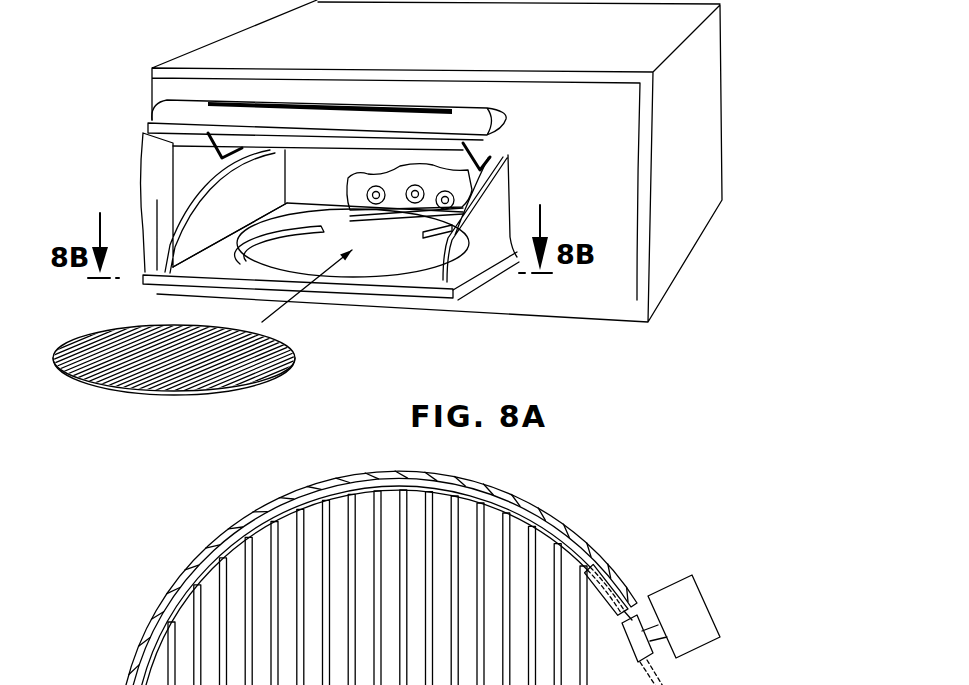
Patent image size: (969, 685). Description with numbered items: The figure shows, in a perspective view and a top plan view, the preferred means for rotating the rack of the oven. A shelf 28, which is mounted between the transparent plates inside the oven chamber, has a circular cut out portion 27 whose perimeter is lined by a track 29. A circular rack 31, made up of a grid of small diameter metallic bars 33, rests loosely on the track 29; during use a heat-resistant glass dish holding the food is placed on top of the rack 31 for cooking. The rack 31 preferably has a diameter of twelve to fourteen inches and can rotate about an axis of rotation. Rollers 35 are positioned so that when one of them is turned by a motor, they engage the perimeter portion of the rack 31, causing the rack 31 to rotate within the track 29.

In FIG. 8A, the circular cut out portion 27 is at (368, 262).
In FIG. 8A, the shelf 28 is at (428, 278).
In FIG. 8A, the track 29 is at (188, 289).
In FIG. 8A, the circular rack 31 is at (145, 397).
In FIG. 8B, the circular rack 31 is at (595, 552).
In FIG. 8B, the metallic bars 33 is at (534, 557).
In FIG. 8A, the rollers 35 is at (360, 178).
In FIG. 8B, the rollers 35 is at (667, 643).